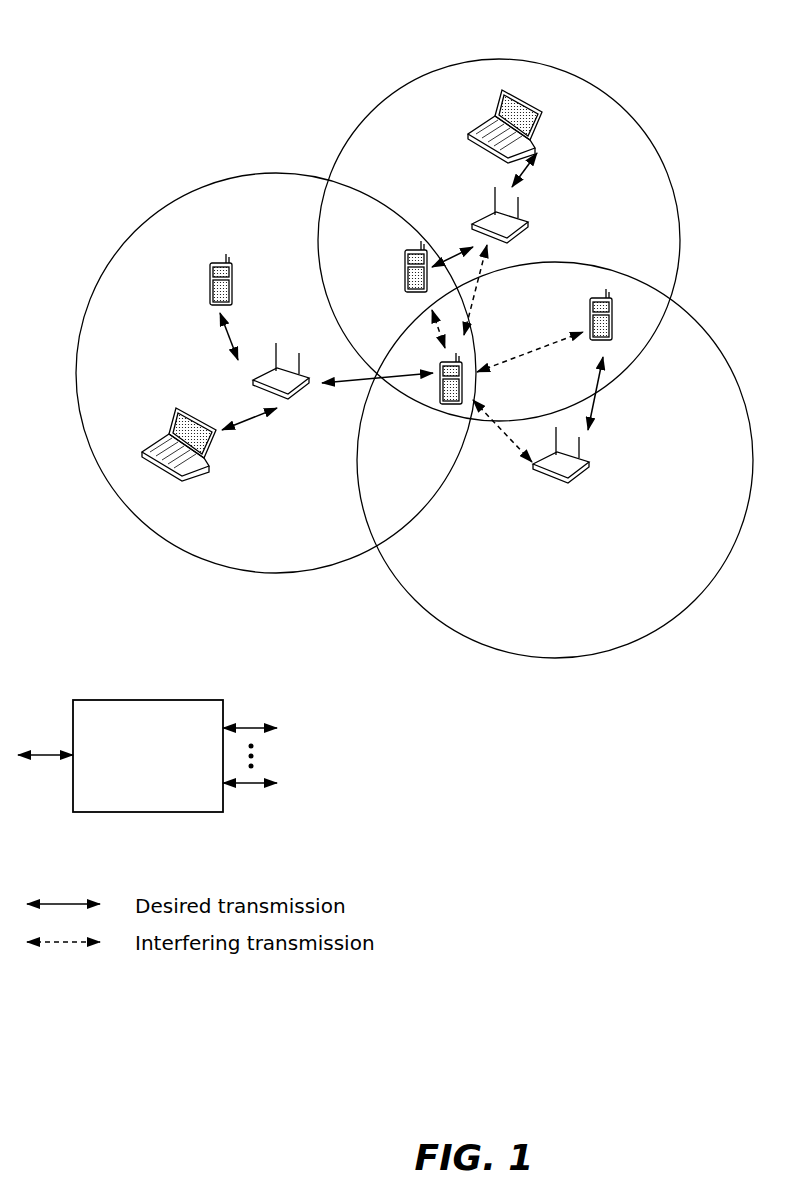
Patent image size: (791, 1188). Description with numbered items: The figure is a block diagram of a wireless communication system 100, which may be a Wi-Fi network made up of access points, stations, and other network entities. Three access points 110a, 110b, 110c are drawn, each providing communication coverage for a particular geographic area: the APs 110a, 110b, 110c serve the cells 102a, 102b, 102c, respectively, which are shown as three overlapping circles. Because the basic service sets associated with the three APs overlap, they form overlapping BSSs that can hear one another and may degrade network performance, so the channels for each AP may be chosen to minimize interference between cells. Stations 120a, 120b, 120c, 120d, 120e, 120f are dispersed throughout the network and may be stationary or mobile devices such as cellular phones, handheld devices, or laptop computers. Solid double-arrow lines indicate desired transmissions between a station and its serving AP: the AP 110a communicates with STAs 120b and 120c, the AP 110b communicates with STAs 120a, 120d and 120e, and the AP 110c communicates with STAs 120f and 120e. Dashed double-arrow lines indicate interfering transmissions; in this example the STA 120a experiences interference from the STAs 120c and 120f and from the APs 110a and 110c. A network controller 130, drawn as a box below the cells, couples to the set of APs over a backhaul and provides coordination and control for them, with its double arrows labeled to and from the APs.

The wireless communication system 100 is at (128, 54).
The cell 102a is at (610, 96).
The cell 102b is at (215, 183).
The cell 102c is at (731, 368).
The AP 110a is at (484, 210).
The AP 110b is at (293, 401).
The AP 110c is at (568, 491).
The STA 120a is at (440, 373).
The STA 120b is at (492, 105).
The STA 120c is at (405, 264).
The STA 120d is at (210, 271).
The STA 120e is at (170, 413).
The STA 120f is at (590, 313).
The network controller 130 is at (143, 699).